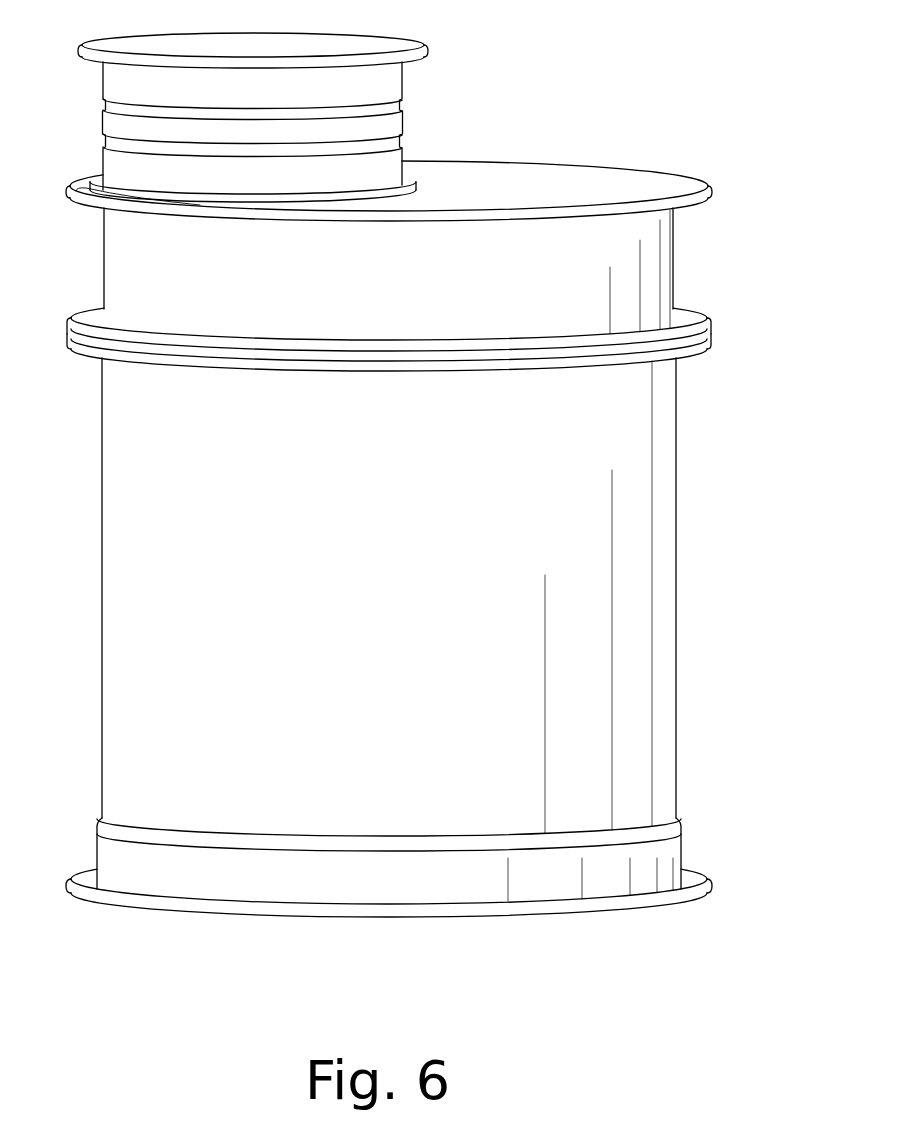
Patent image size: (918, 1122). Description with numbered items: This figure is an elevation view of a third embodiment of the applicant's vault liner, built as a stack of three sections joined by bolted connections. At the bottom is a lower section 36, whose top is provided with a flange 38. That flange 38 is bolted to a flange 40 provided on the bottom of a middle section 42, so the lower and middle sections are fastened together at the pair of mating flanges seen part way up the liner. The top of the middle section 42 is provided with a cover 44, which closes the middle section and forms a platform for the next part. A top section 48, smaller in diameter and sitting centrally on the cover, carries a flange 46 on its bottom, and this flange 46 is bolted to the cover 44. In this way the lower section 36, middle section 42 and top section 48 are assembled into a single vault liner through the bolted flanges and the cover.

The lower section 36 is at (704, 632).
The flange 38 is at (707, 346).
The flange 40 is at (695, 318).
The middle section 42 is at (704, 247).
The cover 44 is at (627, 172).
The flange 46 is at (402, 183).
The top section 48 is at (402, 82).